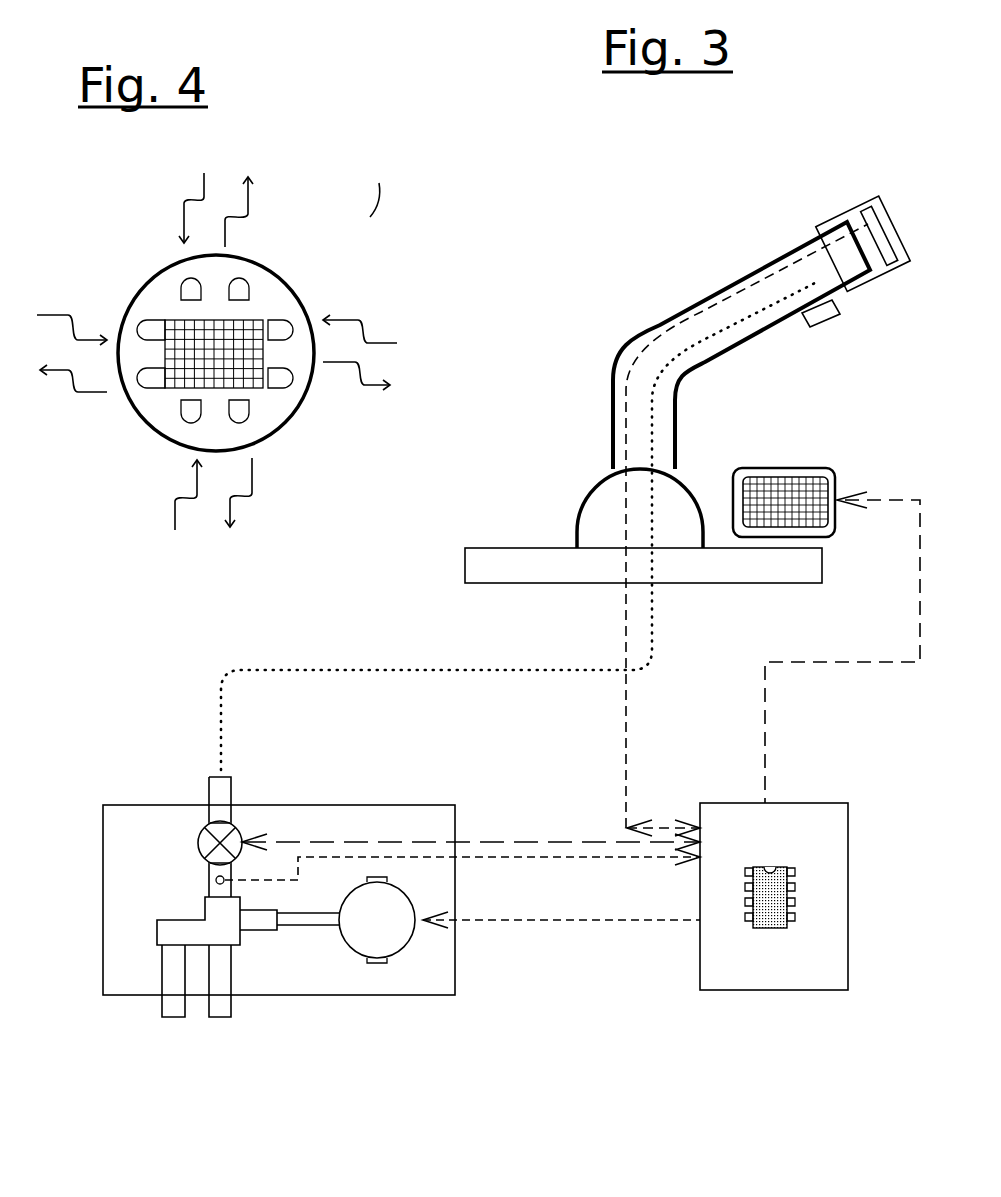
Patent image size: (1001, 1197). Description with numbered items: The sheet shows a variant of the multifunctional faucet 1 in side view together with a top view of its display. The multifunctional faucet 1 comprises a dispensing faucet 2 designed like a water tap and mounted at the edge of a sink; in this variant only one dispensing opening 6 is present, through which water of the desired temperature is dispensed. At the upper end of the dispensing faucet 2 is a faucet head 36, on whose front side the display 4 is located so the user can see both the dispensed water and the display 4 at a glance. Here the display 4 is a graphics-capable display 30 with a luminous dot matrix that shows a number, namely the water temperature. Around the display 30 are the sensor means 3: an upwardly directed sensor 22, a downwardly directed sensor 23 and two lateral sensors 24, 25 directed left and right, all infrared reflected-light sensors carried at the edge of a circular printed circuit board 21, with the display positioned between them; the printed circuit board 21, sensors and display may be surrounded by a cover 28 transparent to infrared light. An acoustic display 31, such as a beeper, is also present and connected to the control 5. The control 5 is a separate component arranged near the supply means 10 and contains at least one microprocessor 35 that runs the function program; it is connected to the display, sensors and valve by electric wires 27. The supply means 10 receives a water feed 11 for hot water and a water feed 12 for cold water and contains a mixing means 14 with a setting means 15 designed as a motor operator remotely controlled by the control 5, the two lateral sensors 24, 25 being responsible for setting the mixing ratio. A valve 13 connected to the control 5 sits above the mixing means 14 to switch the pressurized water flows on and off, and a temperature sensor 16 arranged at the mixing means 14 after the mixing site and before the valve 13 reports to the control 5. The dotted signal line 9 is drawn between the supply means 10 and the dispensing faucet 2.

In FIG. 3, the multifunctional faucet 1 is at (715, 328).
In FIG. 3, the dispensing faucet 2 is at (700, 302).
In FIG. 4, the sensor means 3 is at (223, 292).
In FIG. 3, the sensor means 3 is at (870, 208).
In FIG. 4, the display 4 is at (272, 243).
In FIG. 3, the display 4 is at (883, 212).
In FIG. 3, the control 5 is at (774, 884).
In FIG. 3, the dispensing opening 6 is at (822, 312).
In FIG. 3, the signal line (dotted) 9 is at (418, 668).
In FIG. 3, the supply means 10 is at (323, 911).
In FIG. 3, the water feed for hot water 11 is at (170, 1007).
In FIG. 3, the water feed for cold water 12 is at (223, 1003).
In FIG. 3, the valve 13 is at (228, 843).
In FIG. 3, the mixing means 14 is at (230, 930).
In FIG. 3, the setting means 15 is at (382, 938).
In FIG. 3, the temperature sensor 16 is at (212, 878).
In FIG. 4, the printed circuit board 21 is at (145, 298).
In FIG. 4, the upwardly directed sensor 22 is at (187, 283).
In FIG. 4, the downwardly directed sensor 23 is at (240, 417).
In FIG. 4, the lateral sensor 24 is at (147, 377).
In FIG. 4, the lateral sensor 25 is at (285, 377).
In FIG. 3, the electric wires 27 is at (627, 727).
In FIG. 3, the cover 28 is at (797, 241).
In FIG. 4, the graphics-capable display 30 is at (250, 323).
In FIG. 3, the acoustic display 31 is at (783, 492).
In FIG. 3, the microprocessor 35 is at (770, 913).
In FIG. 3, the faucet head 36 is at (741, 302).